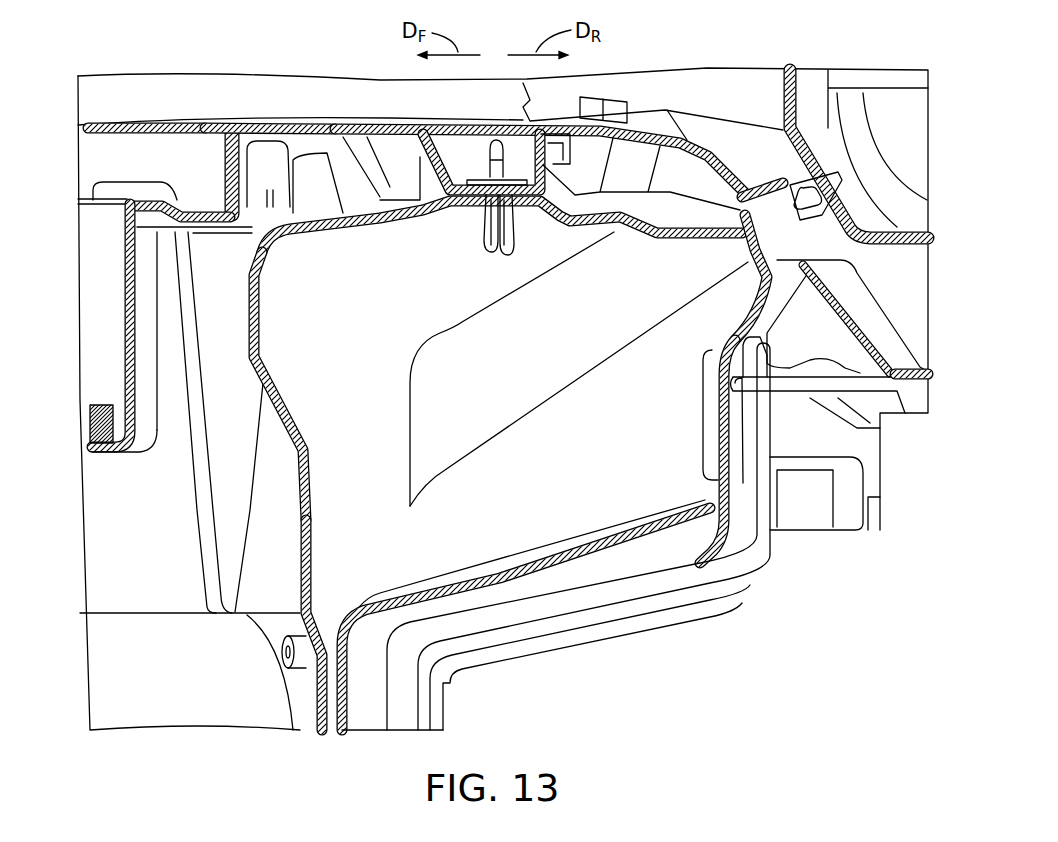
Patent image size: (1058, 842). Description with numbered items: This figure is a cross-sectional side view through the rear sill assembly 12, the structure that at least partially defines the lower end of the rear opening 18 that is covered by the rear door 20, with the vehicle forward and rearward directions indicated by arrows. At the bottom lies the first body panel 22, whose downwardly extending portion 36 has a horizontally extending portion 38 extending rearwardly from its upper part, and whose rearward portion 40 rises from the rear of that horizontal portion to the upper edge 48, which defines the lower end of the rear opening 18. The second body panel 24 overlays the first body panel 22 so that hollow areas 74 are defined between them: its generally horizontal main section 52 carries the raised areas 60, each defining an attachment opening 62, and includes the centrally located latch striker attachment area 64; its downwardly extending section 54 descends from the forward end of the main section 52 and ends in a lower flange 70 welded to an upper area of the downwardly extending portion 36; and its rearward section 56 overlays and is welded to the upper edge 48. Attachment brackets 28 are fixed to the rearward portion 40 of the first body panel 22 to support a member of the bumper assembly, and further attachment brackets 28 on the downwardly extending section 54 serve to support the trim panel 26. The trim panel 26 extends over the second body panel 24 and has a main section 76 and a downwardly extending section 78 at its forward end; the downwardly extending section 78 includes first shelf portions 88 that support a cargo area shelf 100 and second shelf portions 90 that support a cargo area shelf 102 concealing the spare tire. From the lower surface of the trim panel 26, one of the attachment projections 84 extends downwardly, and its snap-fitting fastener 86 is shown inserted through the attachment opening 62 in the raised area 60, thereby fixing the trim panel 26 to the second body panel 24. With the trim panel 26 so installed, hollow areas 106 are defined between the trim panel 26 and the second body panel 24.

The rear sill assembly 12 is at (882, 43).
The rear opening 18 is at (374, 123).
The rear door 20 is at (797, 92).
The first body panel 22 is at (542, 578).
The second body panel 24 is at (292, 525).
The trim panel 26 is at (455, 115).
The attachment brackets 28 is at (248, 253).
The downwardly extending portion 36 is at (345, 705).
The horizontally extending portion 38 is at (478, 577).
The rearward portion 40 is at (704, 411).
The upper edge 48 is at (741, 250).
The main section 52 is at (362, 232).
The downwardly extending section 54 is at (310, 560).
The rearward section 56 is at (735, 226).
The raised areas 60 is at (565, 190).
The attachment opening 62 is at (515, 241).
The latch striker attachment area 64 is at (543, 366).
The lower flange 70 is at (318, 700).
The hollow areas 74 is at (582, 494).
The main section 76 is at (297, 123).
The downwardly extending section 78 is at (125, 318).
The attachment projections 84 is at (432, 212).
The snap-fitting fastener 86 is at (488, 250).
The first shelf portions 88 is at (197, 204).
The second shelf portions 90 is at (140, 440).
The cargo area shelf 100 is at (122, 123).
The cargo area shelf 102 is at (95, 404).
The hollow areas 106 is at (395, 163).